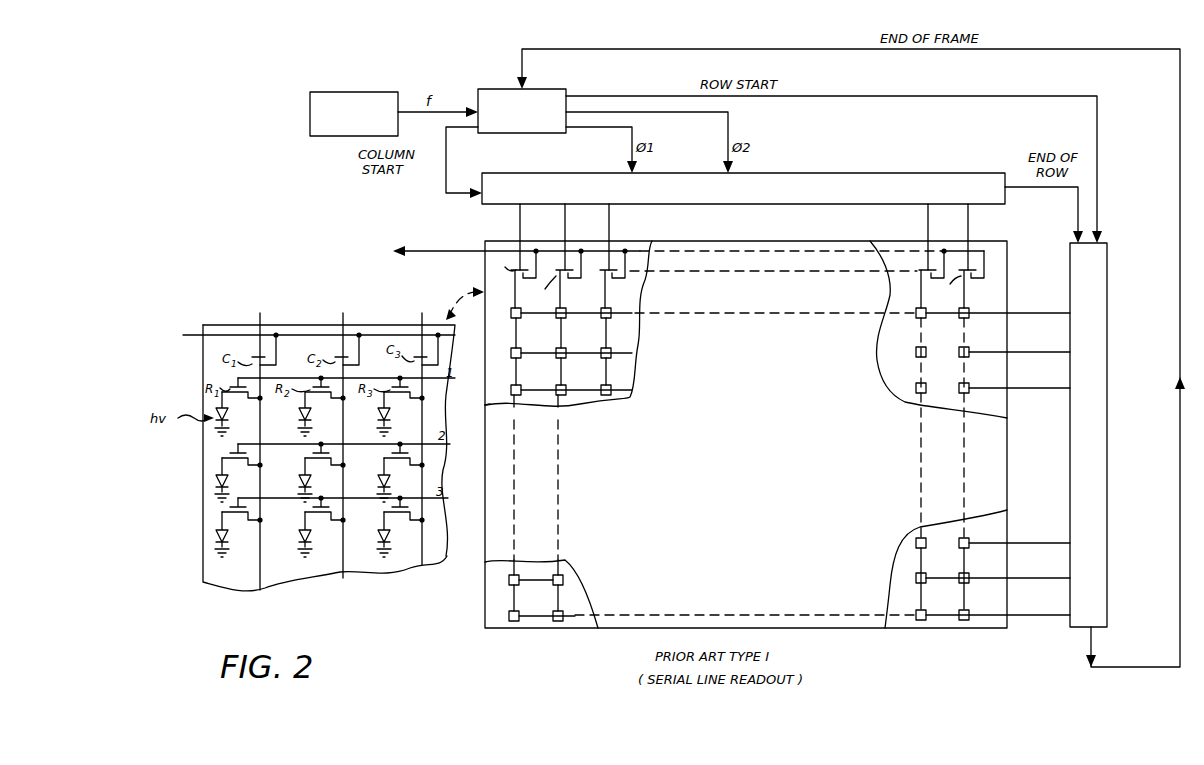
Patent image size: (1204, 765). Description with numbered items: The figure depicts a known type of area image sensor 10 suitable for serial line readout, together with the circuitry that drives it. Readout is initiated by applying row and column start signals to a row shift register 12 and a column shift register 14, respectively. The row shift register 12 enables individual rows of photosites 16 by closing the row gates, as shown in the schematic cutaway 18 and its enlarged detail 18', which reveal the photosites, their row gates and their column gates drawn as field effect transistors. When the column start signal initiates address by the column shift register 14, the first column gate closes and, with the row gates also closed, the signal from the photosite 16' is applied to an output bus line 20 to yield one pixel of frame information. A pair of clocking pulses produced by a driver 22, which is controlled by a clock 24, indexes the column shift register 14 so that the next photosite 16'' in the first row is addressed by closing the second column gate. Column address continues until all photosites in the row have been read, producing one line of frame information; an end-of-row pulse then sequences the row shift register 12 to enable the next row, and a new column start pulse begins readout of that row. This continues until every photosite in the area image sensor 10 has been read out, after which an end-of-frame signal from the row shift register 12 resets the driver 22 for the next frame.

The area image sensor 10 is at (756, 515).
The row shift register 12 is at (1108, 330).
The column shift register 14 is at (918, 173).
The photosites 16 is at (727, 455).
The photosite 16' is at (239, 407).
The photosite 16'' is at (322, 407).
The schematic cutaway 18 is at (558, 411).
The schematic cutaway 18' is at (329, 470).
The output bus line 20 is at (449, 251).
The driver 22 is at (503, 89).
The clock 24 is at (378, 92).